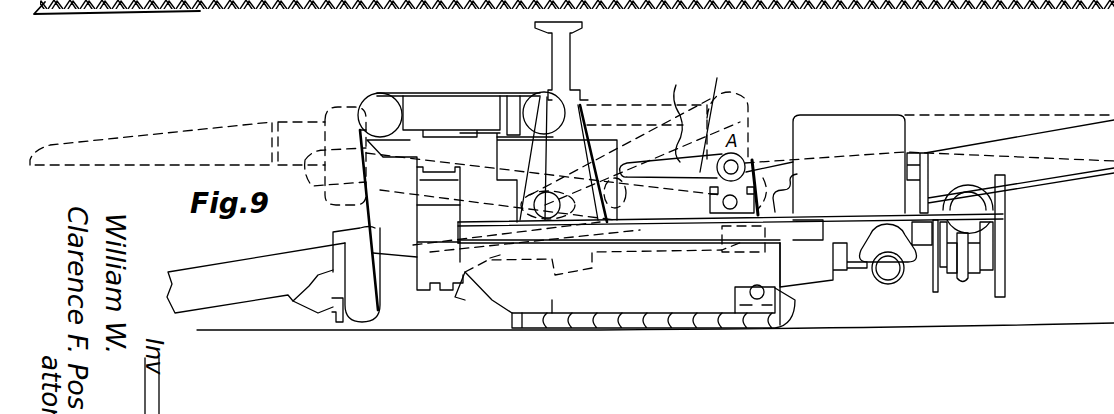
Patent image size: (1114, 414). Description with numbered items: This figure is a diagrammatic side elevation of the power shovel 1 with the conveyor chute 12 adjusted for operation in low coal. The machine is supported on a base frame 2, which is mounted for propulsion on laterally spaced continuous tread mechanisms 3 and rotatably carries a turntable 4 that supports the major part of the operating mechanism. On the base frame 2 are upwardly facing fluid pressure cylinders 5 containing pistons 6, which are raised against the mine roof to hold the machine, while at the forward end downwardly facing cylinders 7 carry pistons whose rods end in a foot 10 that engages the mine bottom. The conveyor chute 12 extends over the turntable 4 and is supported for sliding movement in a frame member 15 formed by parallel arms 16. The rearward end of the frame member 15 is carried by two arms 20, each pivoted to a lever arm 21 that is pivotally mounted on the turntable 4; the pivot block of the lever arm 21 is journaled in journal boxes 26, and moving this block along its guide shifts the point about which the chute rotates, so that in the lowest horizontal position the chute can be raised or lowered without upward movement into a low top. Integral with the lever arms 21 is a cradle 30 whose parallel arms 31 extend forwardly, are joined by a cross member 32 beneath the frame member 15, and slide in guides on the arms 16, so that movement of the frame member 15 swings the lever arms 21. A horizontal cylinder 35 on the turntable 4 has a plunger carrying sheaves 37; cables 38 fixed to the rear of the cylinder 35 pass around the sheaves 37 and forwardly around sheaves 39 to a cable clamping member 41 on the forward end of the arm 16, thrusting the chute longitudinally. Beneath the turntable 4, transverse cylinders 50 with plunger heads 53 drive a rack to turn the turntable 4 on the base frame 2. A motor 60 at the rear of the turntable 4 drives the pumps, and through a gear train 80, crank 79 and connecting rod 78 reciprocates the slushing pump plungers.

The power shovel 1 is at (352, 100).
The base frame 2 is at (830, 280).
The continuous tread mechanisms 3 is at (782, 302).
The turntable 4 is at (794, 190).
The fluid pressure cylinders 5 is at (584, 102).
The pistons 6 is at (575, 55).
The fluid pressure cylinders 7 is at (460, 198).
The foot 10 is at (478, 300).
The conveyor chute 12 is at (288, 250).
The frame member 15 is at (384, 312).
The parallel arms 16 is at (417, 213).
The arms 20 is at (671, 114).
The lever arm 21 is at (716, 114).
The journal boxes 26 is at (742, 170).
The cradle 30 is at (408, 265).
The parallel arms 31 is at (327, 279).
The cross member 32 is at (612, 298).
The cylinder 35 is at (455, 95).
The sheaves 37 is at (538, 95).
The cables 38 is at (413, 93).
The sheaves 39 is at (380, 93).
The cable clamping member 41 is at (488, 360).
The cylinders 50 is at (889, 284).
The head 53 is at (885, 242).
The motor 60 is at (854, 100).
The connecting rod 78 is at (968, 278).
The crank 79 is at (957, 277).
The gear train 80 is at (1007, 240).